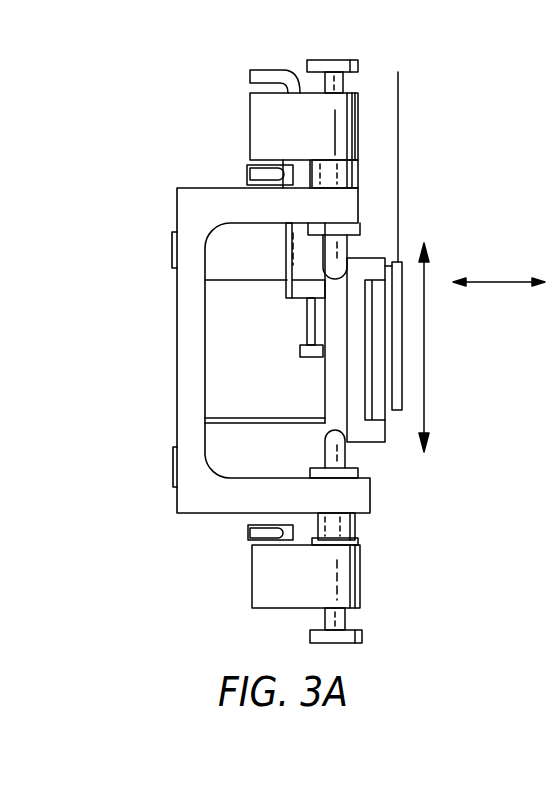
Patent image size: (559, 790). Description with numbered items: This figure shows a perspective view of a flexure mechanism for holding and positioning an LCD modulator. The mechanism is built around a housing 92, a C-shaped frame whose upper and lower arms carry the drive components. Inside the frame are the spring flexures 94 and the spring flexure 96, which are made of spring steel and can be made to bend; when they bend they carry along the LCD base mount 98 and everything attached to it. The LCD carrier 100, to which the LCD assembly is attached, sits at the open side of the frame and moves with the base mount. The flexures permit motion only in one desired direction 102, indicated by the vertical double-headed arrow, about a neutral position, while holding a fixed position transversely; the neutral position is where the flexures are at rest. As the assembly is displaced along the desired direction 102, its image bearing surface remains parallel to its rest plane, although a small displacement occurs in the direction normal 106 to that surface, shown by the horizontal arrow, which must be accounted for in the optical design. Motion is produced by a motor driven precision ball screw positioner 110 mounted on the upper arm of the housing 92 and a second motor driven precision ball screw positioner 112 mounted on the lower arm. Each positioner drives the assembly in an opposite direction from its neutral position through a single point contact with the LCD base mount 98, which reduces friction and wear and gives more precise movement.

The housing 92 is at (177, 431).
The spring flexures 94 is at (240, 418).
The spring flexure 96 is at (228, 284).
The LCD base mount 98 is at (332, 408).
The LCD carrier 100 is at (380, 443).
The desired direction 102 is at (426, 363).
The direction normal 106 is at (497, 282).
The motor driven precision ball screw positioner 110 is at (250, 124).
The motor driven precision ball screw positioner 112 is at (360, 570).